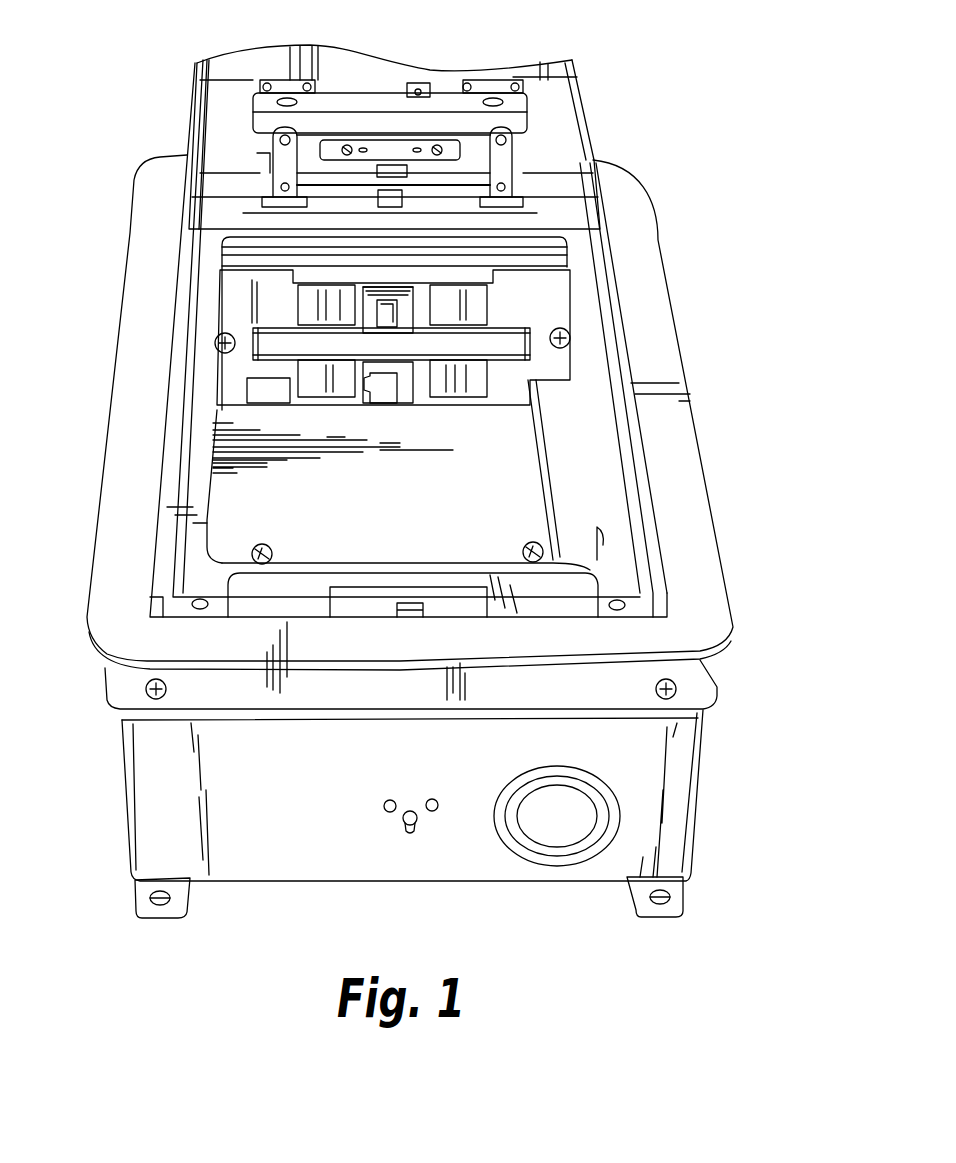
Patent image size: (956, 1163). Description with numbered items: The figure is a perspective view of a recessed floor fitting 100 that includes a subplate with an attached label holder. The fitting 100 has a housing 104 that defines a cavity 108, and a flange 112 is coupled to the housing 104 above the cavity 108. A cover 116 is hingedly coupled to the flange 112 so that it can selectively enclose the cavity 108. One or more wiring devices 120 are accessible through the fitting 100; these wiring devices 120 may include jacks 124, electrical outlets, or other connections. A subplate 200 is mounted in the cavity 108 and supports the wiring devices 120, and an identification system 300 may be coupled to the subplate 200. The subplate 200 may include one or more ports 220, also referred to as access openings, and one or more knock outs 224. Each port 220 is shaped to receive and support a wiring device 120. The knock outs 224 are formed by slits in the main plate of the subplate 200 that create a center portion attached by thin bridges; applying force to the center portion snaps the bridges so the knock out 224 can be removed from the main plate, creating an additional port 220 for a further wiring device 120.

The fitting 100 is at (671, 120).
The housing 104 is at (680, 767).
The cavity 108 is at (538, 426).
The flange 112 is at (697, 548).
The cover 116 is at (413, 75).
The wiring device 120 is at (375, 286).
The jack 124 is at (380, 316).
The subplate 200 is at (533, 297).
The port 220 is at (425, 278).
The knock out 224 is at (460, 303).
The identification system 300 is at (523, 347).